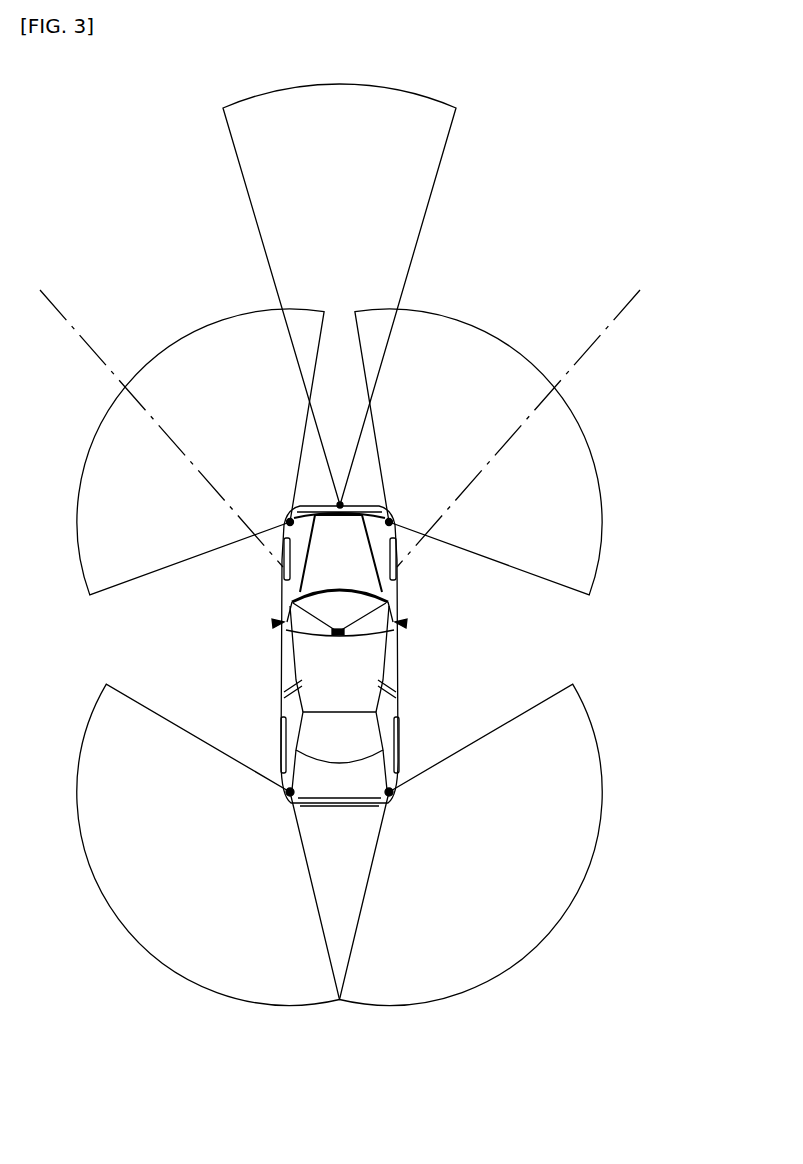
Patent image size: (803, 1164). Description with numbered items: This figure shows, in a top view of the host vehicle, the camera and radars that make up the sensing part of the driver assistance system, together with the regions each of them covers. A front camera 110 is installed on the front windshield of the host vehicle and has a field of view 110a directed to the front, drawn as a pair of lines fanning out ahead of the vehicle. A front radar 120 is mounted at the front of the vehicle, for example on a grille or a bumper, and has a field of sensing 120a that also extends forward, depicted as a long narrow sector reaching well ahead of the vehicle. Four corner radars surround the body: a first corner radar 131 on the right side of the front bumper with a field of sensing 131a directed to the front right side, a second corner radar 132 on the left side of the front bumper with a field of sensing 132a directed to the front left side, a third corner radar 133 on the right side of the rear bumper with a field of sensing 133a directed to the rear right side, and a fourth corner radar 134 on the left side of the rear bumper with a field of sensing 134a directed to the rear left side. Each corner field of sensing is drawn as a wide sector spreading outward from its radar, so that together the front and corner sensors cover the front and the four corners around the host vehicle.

The front camera 110 is at (345, 633).
The field of view 110a is at (603, 330).
The front radar 120 is at (342, 504).
The field of sensing 120a is at (412, 197).
The first corner radar 131 is at (392, 520).
The field of sensing 131a is at (500, 353).
The second corner radar 132 is at (288, 520).
The field of sensing 132a is at (180, 353).
The third corner radar 133 is at (392, 796).
The field of sensing 133a is at (558, 905).
The fourth corner radar 134 is at (287, 796).
The field of sensing 134a is at (125, 905).